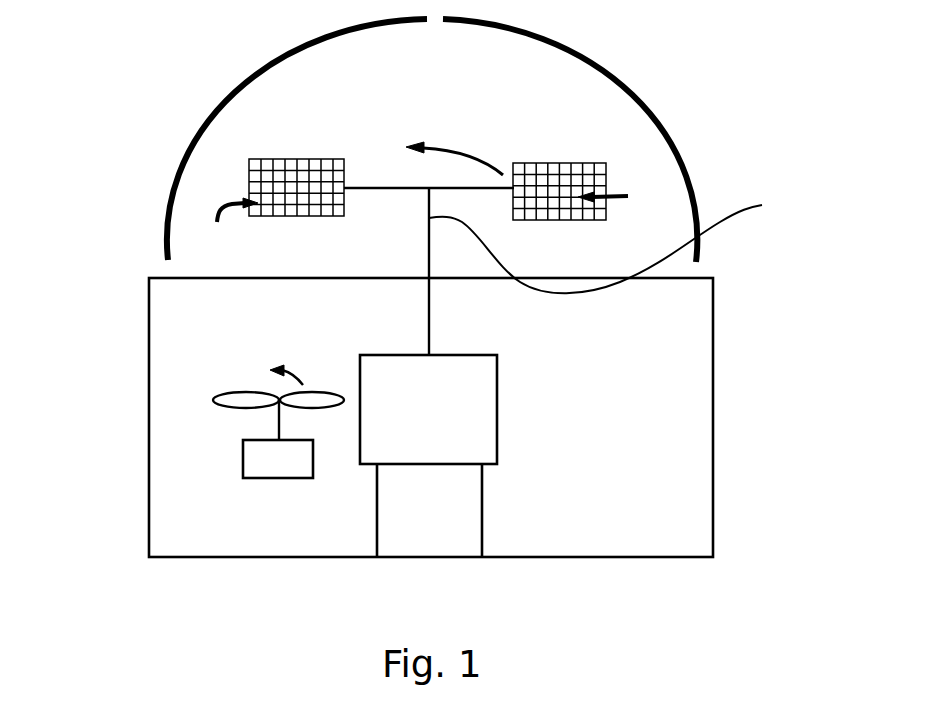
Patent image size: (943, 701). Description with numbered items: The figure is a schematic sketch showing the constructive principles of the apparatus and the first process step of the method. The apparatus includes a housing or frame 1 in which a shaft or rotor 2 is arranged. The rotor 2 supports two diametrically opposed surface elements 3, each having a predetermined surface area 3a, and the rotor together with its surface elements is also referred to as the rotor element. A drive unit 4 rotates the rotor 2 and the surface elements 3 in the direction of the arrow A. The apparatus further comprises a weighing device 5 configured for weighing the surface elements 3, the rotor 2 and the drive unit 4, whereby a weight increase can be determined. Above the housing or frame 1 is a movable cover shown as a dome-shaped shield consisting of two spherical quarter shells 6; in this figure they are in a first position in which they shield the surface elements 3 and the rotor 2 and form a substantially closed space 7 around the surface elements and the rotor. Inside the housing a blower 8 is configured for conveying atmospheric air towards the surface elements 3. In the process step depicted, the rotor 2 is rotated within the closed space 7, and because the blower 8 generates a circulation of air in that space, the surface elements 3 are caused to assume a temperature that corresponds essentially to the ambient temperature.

The housing or frame 1 is at (715, 346).
The shaft or rotor 2 is at (562, 271).
The surface elements 3 is at (304, 157).
The predetermined surface areas 3a is at (426, 221).
The drive unit 4 is at (472, 437).
The weighing device 5 is at (395, 521).
The spherical quarter shells 6 is at (200, 126).
The closed space 7 is at (213, 318).
The blower 8 is at (270, 416).
The arrow A is at (473, 145).